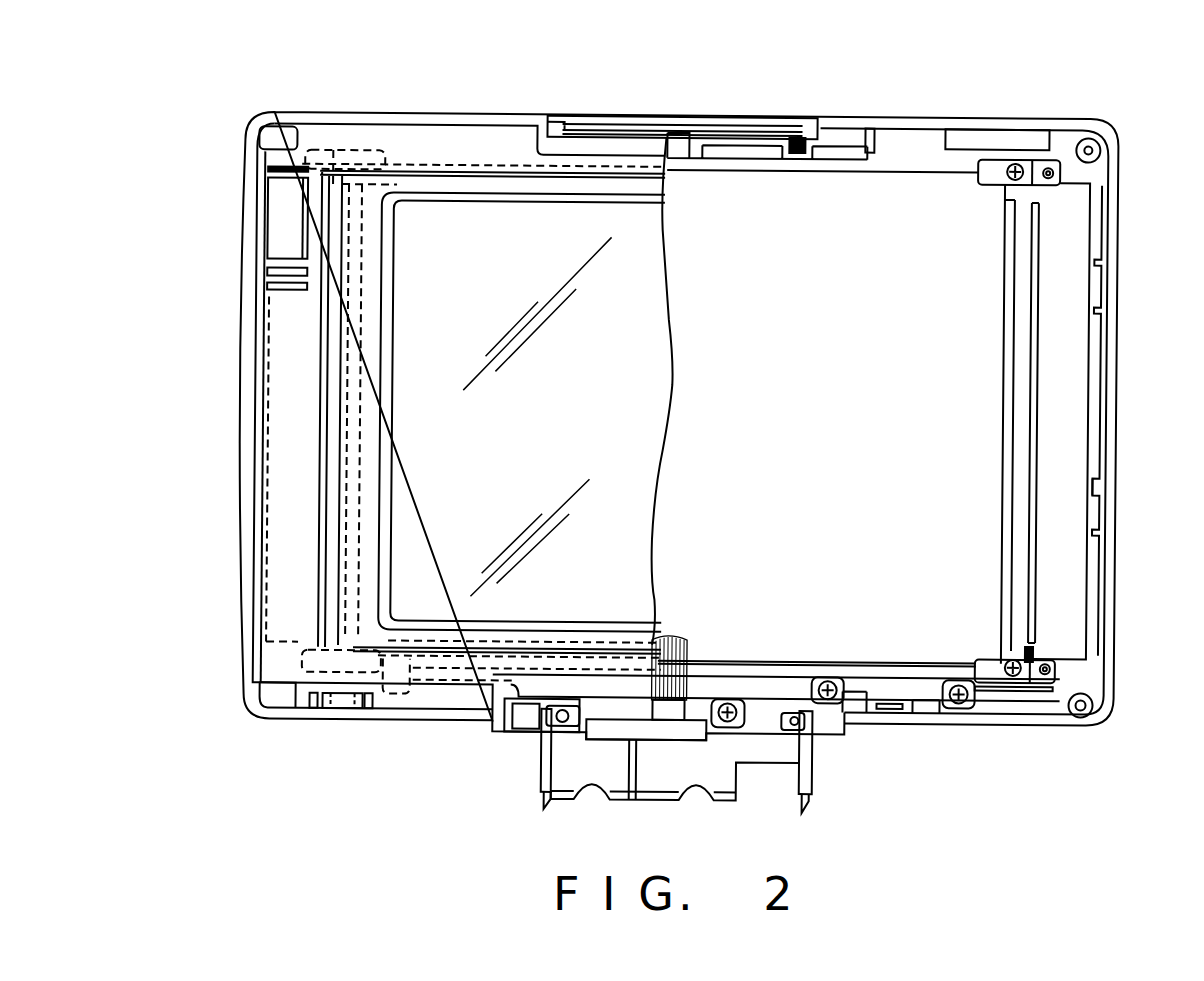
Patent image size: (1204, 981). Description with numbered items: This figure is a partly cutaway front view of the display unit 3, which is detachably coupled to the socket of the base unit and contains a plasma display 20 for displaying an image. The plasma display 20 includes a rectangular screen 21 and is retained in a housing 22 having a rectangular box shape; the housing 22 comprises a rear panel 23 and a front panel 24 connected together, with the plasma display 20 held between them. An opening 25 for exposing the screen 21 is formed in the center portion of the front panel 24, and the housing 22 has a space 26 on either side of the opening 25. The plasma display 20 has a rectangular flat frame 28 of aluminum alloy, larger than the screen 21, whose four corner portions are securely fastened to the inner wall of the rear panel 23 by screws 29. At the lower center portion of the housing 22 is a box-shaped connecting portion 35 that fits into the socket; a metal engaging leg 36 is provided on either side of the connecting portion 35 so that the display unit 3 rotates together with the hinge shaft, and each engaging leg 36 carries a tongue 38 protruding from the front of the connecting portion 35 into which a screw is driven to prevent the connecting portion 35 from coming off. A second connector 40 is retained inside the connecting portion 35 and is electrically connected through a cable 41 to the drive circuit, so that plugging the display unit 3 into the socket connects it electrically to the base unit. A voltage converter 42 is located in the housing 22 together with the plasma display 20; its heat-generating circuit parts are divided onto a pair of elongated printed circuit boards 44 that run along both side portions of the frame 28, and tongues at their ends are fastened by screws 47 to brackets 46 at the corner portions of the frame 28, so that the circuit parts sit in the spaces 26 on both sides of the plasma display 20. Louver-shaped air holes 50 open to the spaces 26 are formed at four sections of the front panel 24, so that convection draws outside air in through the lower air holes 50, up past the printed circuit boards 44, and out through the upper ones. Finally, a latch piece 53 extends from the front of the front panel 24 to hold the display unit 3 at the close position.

The display unit 3 is at (1094, 110).
The plasma display 20 is at (985, 427).
The screen 21 is at (658, 393).
The housing 22 is at (441, 116).
The rear panel 23 is at (1088, 668).
The front panel 24 is at (278, 527).
The opening 25 is at (393, 441).
The space 26 is at (273, 661).
The frame 28 is at (1022, 643).
The screws 29 is at (1013, 161).
The connecting portion 35 is at (722, 787).
The engaging leg 36 is at (554, 812).
The tongue 38 is at (548, 728).
The second connector 40 is at (673, 718).
The cable 41 is at (690, 657).
The voltage converter 42 is at (283, 372).
The printed circuit boards 44 is at (280, 598).
The brackets 46 is at (323, 152).
The screws 47 is at (1060, 182).
The air holes 50 is at (268, 270).
The latch piece 53 is at (746, 126).